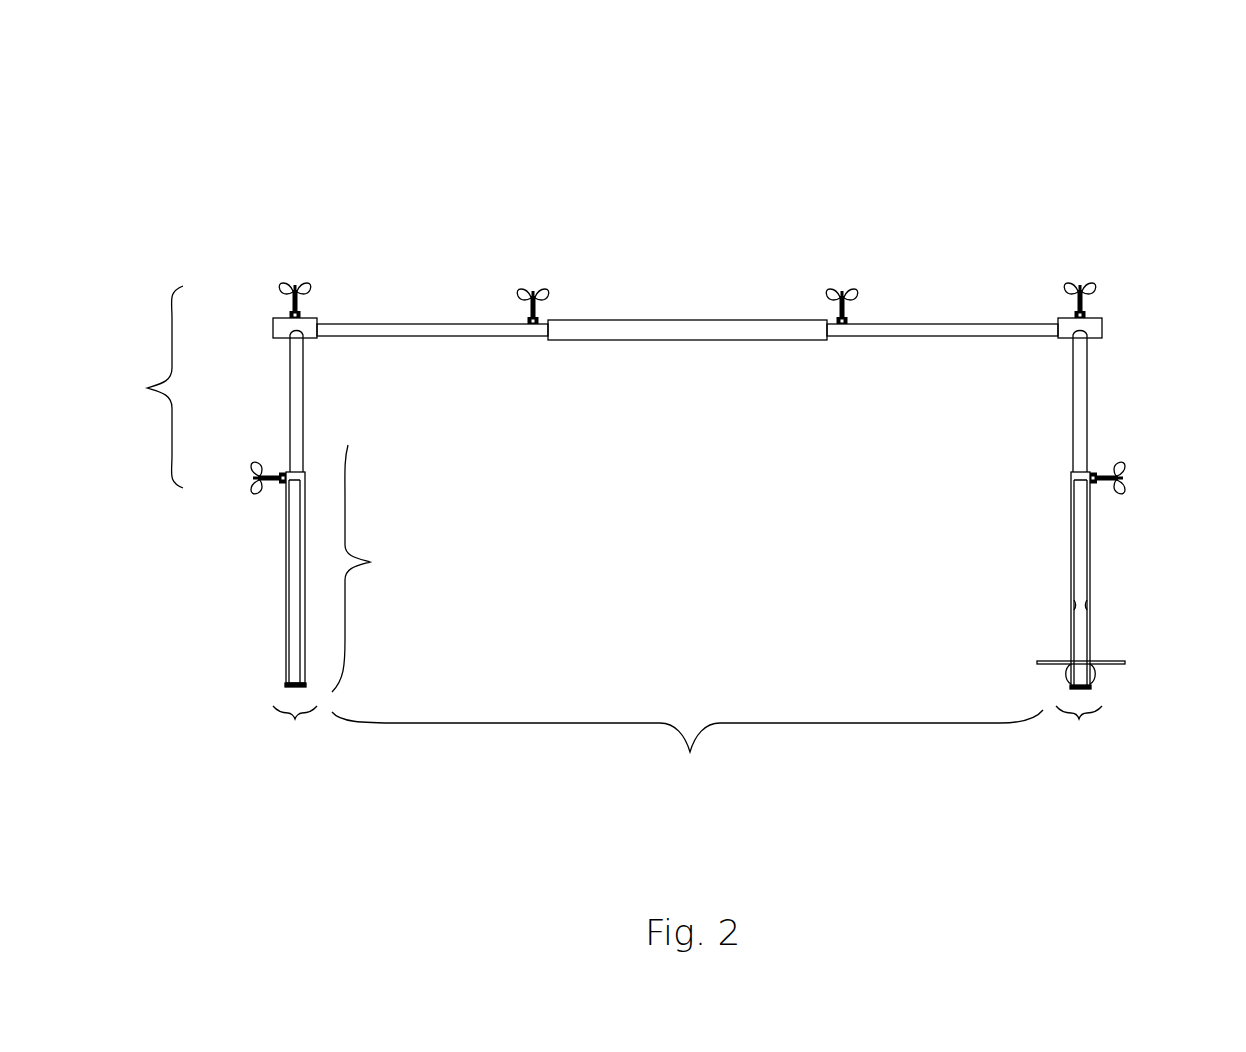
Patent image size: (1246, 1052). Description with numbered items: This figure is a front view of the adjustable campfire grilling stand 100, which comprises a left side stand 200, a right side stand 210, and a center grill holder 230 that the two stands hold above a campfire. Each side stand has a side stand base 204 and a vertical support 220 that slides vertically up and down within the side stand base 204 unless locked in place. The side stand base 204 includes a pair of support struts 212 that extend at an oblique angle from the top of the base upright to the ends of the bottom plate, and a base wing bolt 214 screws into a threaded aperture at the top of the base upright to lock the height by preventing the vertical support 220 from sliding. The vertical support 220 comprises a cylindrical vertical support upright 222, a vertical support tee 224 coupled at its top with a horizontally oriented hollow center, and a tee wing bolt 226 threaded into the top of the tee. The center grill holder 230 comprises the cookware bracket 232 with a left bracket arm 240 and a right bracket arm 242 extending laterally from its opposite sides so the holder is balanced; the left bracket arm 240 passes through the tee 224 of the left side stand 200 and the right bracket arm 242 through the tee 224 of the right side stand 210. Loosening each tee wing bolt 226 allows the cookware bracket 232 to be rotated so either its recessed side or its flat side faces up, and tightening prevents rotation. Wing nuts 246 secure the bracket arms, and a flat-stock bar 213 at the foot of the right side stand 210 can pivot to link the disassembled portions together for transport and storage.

The adjustable campfire grilling stand 100 is at (142, 196).
The left side stand 200 is at (295, 726).
The side stand base 204 is at (376, 568).
The right side stand 210 is at (1079, 726).
The pair of support struts 212 is at (294, 626).
The bar 213 is at (1108, 666).
The base wing bolt 214 is at (258, 489).
The vertical support 220 is at (143, 387).
The vertical support upright 222 is at (301, 443).
The vertical support tee 224 is at (283, 326).
The tee wing bolt 226 is at (289, 284).
The center grill holder 230 is at (687, 746).
The cookware bracket 232 is at (690, 340).
The left bracket arm 240 is at (420, 336).
The right bracket arm 242 is at (968, 336).
The bar wing nut 246 is at (536, 286).